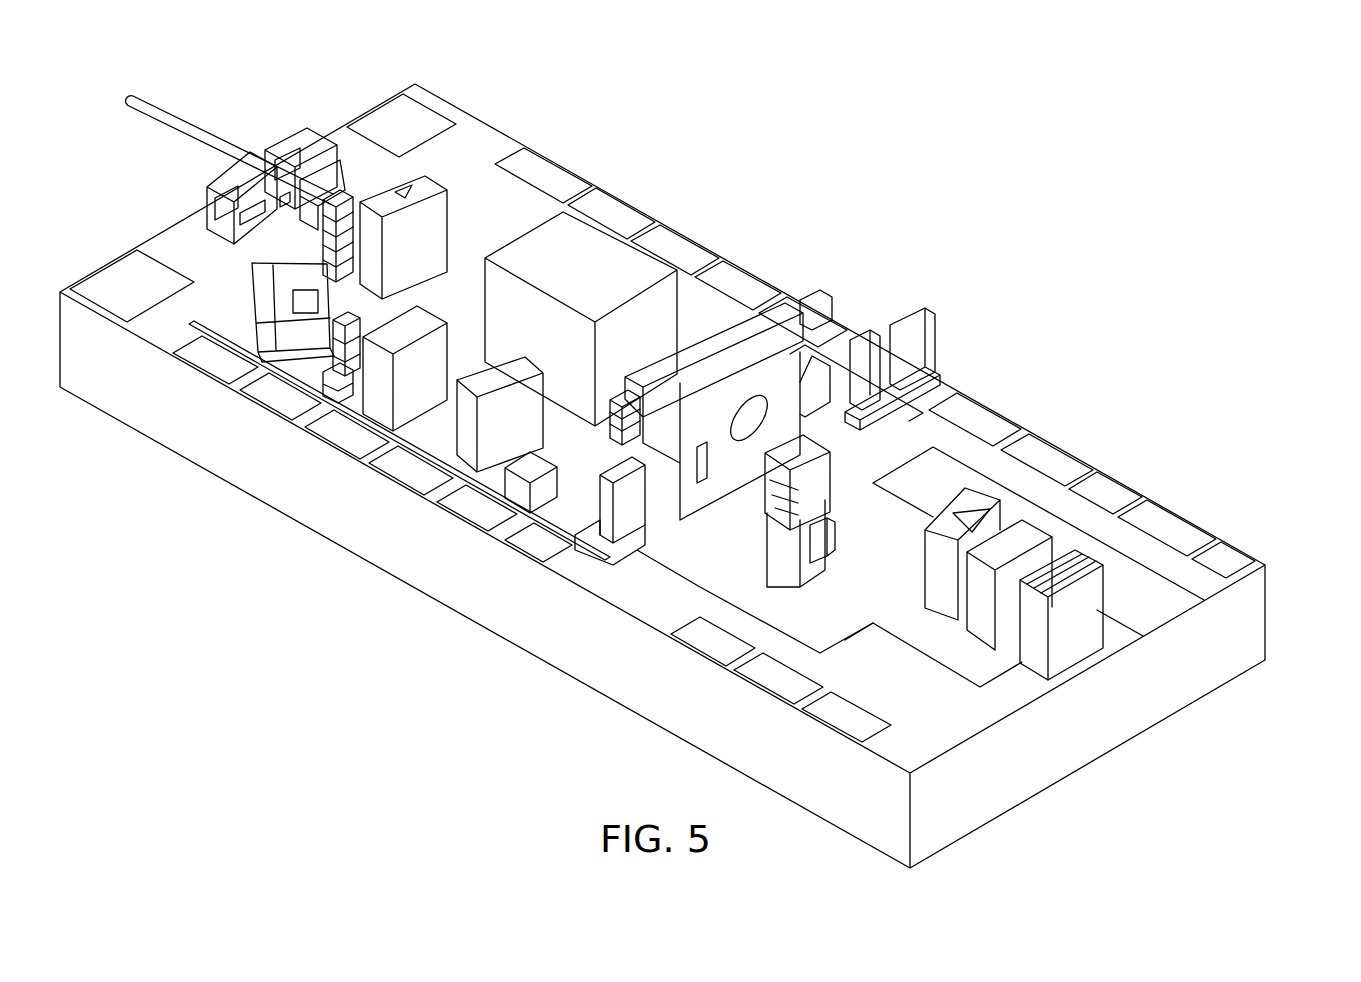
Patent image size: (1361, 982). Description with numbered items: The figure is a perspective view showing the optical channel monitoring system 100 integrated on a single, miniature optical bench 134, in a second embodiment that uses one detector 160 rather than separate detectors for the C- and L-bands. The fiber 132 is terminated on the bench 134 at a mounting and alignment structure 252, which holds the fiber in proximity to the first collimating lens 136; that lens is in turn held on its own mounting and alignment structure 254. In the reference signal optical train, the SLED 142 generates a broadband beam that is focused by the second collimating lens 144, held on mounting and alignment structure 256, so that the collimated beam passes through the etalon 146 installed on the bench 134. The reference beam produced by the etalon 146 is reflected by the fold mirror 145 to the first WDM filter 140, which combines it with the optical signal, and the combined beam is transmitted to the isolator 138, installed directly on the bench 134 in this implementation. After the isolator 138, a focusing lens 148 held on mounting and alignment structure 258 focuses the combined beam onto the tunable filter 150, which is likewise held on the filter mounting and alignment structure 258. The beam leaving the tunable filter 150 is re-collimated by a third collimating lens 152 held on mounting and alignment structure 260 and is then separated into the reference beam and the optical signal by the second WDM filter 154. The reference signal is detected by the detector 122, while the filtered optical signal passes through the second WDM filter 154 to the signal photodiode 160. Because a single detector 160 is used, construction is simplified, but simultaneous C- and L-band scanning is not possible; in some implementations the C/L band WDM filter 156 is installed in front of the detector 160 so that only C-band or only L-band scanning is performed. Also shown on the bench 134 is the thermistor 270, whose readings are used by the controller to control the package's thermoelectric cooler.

The optical channel monitoring system 100 is at (1069, 206).
The detector 122 is at (836, 547).
The fiber 132 is at (168, 108).
The optical bench 134 is at (1268, 622).
The first collimating lens 136 is at (348, 197).
The isolator 138 is at (640, 258).
The first WDM filter 140 is at (430, 186).
The SLED 142 is at (245, 320).
The second collimating lens 144 is at (350, 312).
The fold mirror 145 is at (465, 458).
The etalon 146 is at (370, 412).
The focusing lens 148 is at (668, 362).
The tunable filter 150 is at (775, 395).
The third collimating lens 152 is at (850, 345).
The second WDM filter 154 is at (945, 504).
The C/L band WDM filter 156 is at (1023, 537).
The detector 160 is at (1096, 590).
The mounting and alignment structure 252 is at (305, 128).
The mounting and alignment structure 254 is at (348, 187).
The mounting and alignment structure 256 is at (310, 397).
The mounting and alignment structure 258 is at (828, 300).
The mounting and alignment structure 260 is at (826, 468).
The thermistor 270 is at (510, 490).